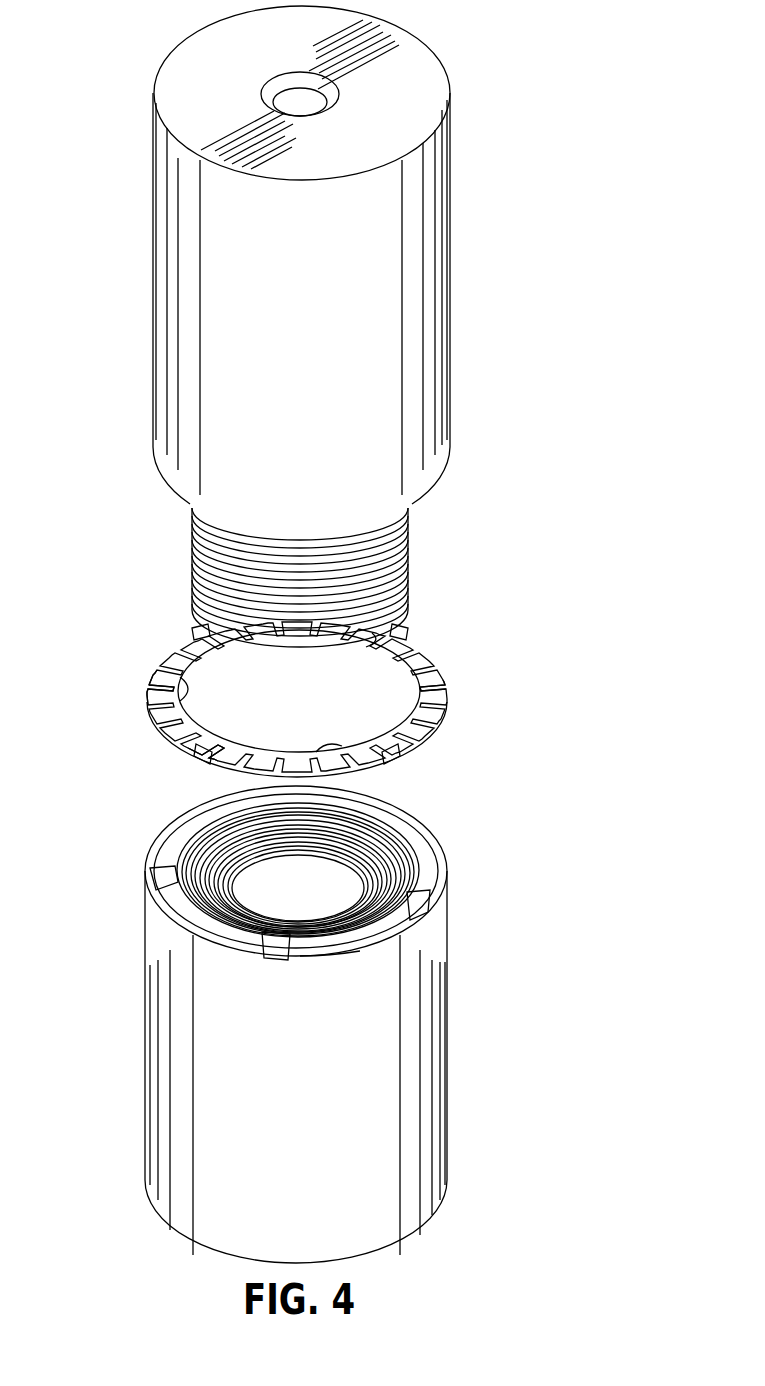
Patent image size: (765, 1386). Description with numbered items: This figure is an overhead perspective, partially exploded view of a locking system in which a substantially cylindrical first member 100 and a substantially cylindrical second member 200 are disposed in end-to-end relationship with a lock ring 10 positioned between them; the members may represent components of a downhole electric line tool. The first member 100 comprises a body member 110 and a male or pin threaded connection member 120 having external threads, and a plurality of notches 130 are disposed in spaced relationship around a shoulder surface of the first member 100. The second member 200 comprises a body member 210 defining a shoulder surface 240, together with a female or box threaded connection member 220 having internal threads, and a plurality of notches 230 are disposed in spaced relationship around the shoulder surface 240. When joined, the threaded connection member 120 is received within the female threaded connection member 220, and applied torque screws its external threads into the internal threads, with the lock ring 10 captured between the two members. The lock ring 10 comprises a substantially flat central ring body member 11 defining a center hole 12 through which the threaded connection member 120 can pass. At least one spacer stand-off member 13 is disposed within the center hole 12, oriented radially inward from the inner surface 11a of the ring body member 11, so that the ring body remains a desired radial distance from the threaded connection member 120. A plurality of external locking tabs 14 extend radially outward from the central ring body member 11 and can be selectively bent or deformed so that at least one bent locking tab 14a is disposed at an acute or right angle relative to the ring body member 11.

The first member 100 is at (452, 298).
The body member 110 is at (190, 284).
The threaded connection member 120 is at (410, 558).
The notches 130 is at (300, 535).
The lock ring 10 is at (453, 670).
The central ring body member 11 is at (435, 658).
The inner surface 11a is at (152, 684).
The center hole 12 is at (425, 702).
The spacer stand-off member 13 is at (190, 681).
The external locking tabs 14 is at (150, 664).
The locking tabs 14a is at (195, 627).
The second member 200 is at (452, 1054).
The body member 210 is at (200, 1043).
The threaded connection member 220 is at (375, 868).
The notches 230 is at (158, 878).
The shoulder surface 240 is at (345, 944).